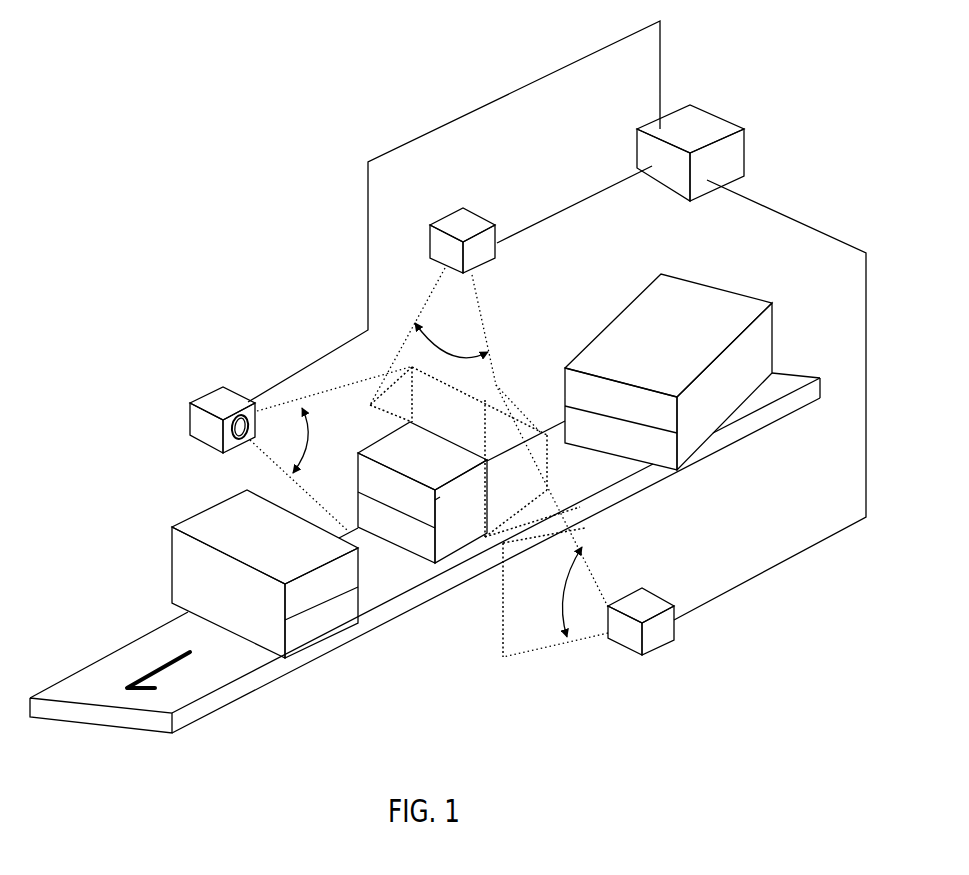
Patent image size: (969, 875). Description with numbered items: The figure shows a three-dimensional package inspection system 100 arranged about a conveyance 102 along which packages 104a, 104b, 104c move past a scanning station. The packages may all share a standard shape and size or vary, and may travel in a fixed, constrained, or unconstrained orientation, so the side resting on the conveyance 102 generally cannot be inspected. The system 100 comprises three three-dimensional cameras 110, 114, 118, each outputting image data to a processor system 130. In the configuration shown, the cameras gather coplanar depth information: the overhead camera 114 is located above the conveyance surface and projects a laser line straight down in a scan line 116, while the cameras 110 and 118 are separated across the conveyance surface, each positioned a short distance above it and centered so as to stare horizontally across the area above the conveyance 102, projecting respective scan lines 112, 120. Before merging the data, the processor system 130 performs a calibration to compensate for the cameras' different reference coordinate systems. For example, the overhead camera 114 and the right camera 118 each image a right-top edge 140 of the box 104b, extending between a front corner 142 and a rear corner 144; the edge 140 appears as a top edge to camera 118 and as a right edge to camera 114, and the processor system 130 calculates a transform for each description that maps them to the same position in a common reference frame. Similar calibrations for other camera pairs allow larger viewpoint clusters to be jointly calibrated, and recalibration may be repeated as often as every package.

The 3D package inspection system 100 is at (110, 284).
The conveyance 102 is at (242, 698).
The package 104a is at (248, 604).
The package 104b is at (447, 467).
The package 104c is at (693, 349).
The 3D camera 110 is at (207, 391).
The scan line 112 is at (285, 440).
The 3D camera 114 is at (443, 212).
The scan line 116 is at (451, 349).
The 3D camera 118 is at (646, 589).
The scan line 120 is at (553, 592).
The processor system 130 is at (708, 111).
The right-top edge 140 is at (457, 478).
The front corner 142 is at (428, 492).
The rear corner 144 is at (538, 430).